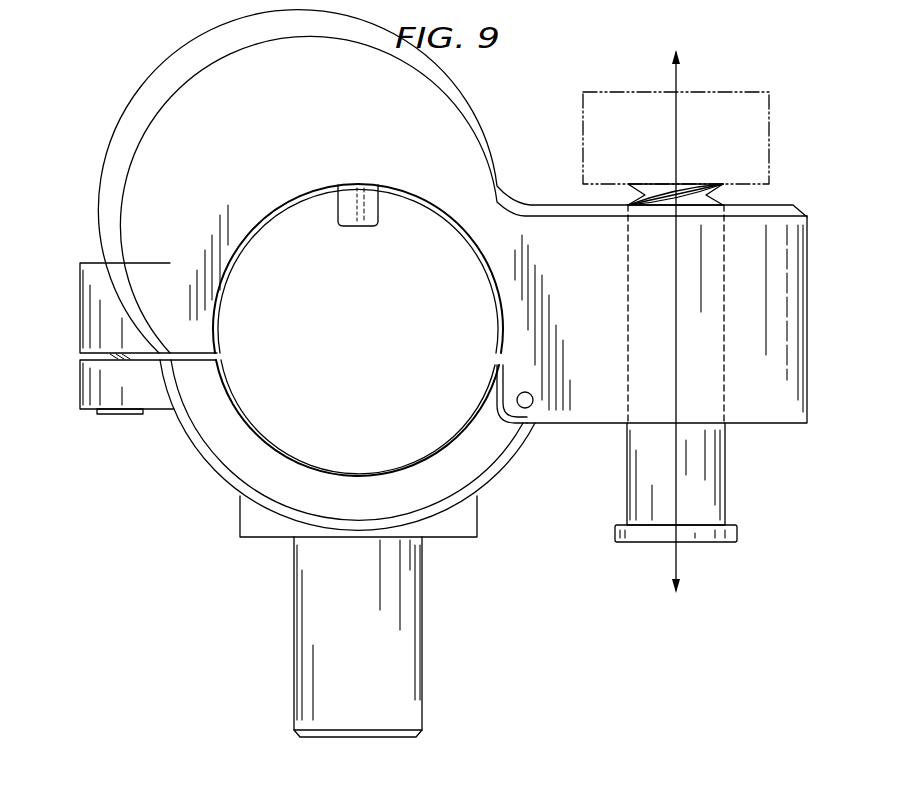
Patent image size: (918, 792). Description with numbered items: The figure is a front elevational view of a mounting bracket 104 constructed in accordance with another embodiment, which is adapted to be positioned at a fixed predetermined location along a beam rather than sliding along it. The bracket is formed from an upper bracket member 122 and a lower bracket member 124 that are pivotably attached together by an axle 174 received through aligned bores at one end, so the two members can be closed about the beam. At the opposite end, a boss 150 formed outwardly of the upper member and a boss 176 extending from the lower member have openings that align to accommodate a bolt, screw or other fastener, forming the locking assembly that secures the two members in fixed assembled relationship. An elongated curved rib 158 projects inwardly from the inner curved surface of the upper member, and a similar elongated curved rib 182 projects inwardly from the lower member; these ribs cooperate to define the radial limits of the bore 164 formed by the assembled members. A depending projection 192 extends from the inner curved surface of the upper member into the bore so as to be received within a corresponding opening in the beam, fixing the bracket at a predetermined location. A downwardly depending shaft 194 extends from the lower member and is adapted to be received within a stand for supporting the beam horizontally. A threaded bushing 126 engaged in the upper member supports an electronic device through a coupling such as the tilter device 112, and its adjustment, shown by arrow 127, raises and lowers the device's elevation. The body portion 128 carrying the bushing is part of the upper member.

The mounting bracket 104 is at (497, 96).
The tilter device 112 is at (775, 110).
The upper bracket member 122 is at (356, 128).
The lower bracket member 124 is at (210, 463).
The bushing 126 is at (726, 476).
The arrow 127 is at (676, 432).
The body extension 128 is at (808, 292).
The boss 150 is at (90, 262).
The elongated curved rib 158 is at (230, 272).
The bore 164 is at (376, 342).
The axle 174 is at (530, 408).
The boss 176 is at (80, 390).
The elongated curved rib 182 is at (245, 415).
The depending projection 192 is at (356, 196).
The downwardly depending shaft 194 is at (423, 672).